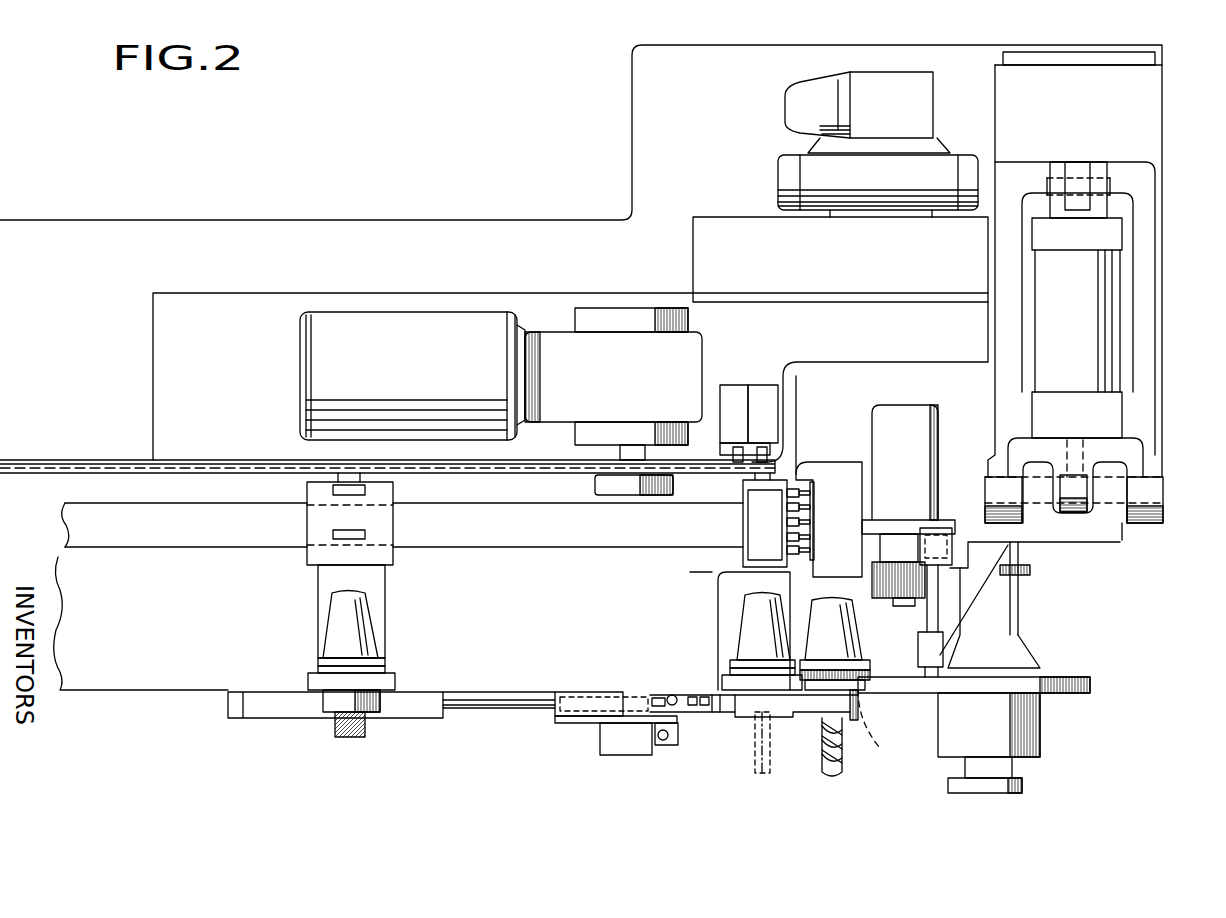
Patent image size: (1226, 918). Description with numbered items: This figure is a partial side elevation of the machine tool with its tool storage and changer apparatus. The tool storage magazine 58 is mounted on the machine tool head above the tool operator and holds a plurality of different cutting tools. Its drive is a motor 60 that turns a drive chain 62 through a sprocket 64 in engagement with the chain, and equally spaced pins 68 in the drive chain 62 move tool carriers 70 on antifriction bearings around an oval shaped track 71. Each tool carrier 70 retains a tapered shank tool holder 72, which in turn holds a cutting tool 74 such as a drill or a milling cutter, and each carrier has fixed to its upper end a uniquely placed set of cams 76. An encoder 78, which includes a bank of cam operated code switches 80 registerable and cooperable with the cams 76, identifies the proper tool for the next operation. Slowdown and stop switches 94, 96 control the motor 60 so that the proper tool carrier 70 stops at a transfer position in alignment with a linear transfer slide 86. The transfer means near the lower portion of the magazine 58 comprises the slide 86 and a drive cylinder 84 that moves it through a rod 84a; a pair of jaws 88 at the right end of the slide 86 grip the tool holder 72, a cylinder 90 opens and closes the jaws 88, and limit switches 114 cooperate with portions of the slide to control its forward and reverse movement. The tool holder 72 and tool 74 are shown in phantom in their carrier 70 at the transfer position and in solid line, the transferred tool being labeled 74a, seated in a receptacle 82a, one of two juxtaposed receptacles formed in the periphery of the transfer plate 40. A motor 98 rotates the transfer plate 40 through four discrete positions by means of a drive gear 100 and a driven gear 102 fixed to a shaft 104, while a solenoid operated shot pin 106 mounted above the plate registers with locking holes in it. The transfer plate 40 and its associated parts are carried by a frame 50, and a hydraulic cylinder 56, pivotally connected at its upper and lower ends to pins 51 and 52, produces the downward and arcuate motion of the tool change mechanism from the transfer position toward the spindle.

The transfer plate 40 is at (1078, 678).
The frame 50 is at (1122, 540).
The pin 51 is at (1108, 186).
The pin 52 is at (1168, 492).
The hydraulic cylinder 56 is at (1090, 322).
The tool storage magazine 58 is at (173, 697).
The motor 60 is at (404, 378).
The drive chain 62 is at (540, 476).
The sprocket 64 is at (612, 485).
The pins 68 is at (340, 490).
The tool carrier 70 is at (375, 588).
The oval shaped track 71 is at (492, 548).
The tapered shank tool holder 72 is at (370, 633).
The cutting tool 74 is at (350, 740).
The drill 74a is at (846, 762).
The cams 76 is at (345, 540).
The encoder 78 is at (835, 478).
The code switches 80 is at (790, 556).
The receptacle 82a is at (889, 728).
The drive cylinder 84 is at (272, 712).
The rod 84a is at (495, 705).
The slide 86 is at (725, 718).
The jaws 88 is at (800, 712).
The cylinder 90 is at (592, 715).
The slowdown switch 94 is at (733, 395).
The stop switch 96 is at (762, 395).
The motor 98 is at (920, 435).
The drive gear 100 is at (893, 545).
The driven gear 102 is at (1030, 570).
The shaft 104 is at (995, 553).
The solenoid operated shot pin 106 is at (932, 690).
The limit switches 114 is at (632, 745).